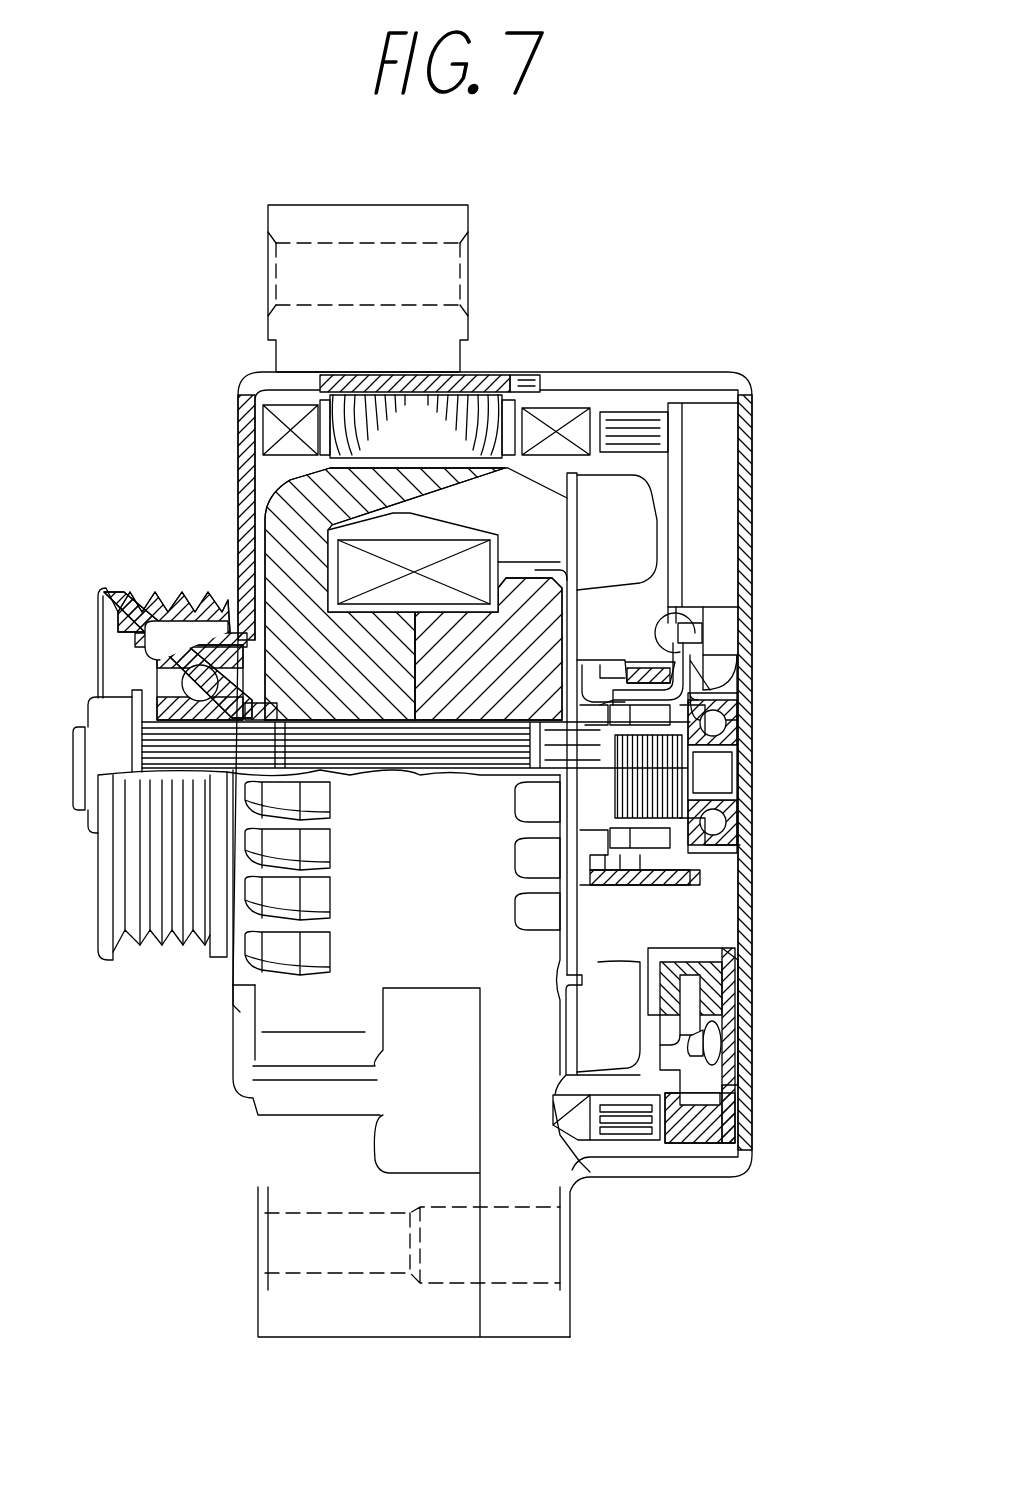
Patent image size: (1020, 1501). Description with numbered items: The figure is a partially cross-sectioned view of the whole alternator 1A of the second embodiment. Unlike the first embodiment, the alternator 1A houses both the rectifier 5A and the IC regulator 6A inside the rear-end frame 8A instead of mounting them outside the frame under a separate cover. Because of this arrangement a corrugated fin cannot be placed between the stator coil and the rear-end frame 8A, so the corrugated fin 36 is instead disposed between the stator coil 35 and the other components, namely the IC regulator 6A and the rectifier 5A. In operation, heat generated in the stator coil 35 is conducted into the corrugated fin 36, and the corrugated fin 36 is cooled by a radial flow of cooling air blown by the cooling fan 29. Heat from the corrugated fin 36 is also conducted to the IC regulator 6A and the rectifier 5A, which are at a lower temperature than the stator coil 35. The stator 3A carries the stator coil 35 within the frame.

The alternator 1A is at (640, 238).
The stator 3A is at (510, 395).
The stator coil 35 is at (570, 410).
The corrugated fin 36 is at (642, 413).
The rear-end frame 8A is at (748, 414).
The cooling fan 29 is at (648, 520).
The IC regulator 6A is at (726, 568).
The rectifier 5A is at (702, 935).